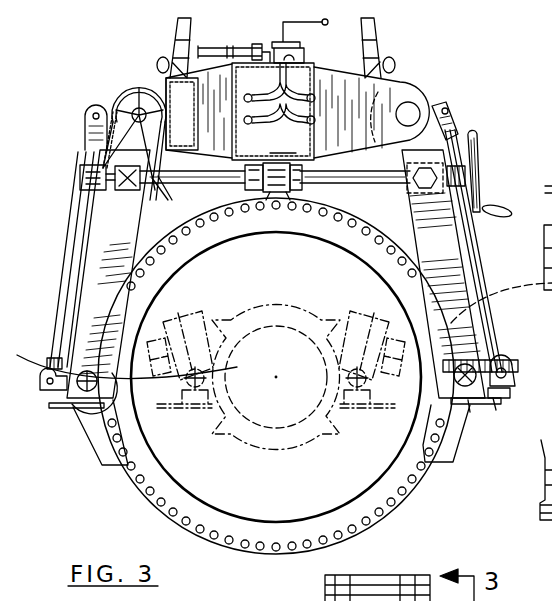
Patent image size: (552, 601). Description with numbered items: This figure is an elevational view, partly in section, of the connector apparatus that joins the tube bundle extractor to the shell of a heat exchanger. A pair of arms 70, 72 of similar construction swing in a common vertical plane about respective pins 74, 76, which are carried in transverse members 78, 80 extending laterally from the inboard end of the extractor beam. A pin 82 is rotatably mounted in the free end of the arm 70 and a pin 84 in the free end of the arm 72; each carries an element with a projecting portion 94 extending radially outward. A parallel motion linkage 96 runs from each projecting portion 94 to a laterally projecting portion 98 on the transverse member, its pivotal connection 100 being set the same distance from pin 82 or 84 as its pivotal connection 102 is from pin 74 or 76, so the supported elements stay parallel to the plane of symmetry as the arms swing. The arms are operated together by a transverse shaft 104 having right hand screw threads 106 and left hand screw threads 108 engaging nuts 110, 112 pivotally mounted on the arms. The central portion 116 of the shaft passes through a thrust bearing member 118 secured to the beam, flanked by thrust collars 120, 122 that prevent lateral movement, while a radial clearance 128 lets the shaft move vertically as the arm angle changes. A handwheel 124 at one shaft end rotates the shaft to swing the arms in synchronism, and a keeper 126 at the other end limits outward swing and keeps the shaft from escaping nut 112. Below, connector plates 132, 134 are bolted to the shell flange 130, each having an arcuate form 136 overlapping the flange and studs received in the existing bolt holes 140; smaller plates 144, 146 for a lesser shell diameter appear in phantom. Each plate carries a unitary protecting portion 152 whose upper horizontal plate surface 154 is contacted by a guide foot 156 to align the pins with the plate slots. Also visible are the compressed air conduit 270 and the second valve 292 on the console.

The arm 70 is at (443, 249).
The arm 72 is at (108, 307).
The pin 74 is at (409, 106).
The pin 76 is at (137, 113).
The transverse member 78 is at (337, 75).
The transverse member 80 is at (193, 106).
The pin 82 is at (476, 382).
The pin 84 is at (80, 398).
The projecting portion 94 is at (56, 410).
The parallel motion linkage 96 is at (66, 262).
The laterally projecting portion 98 is at (110, 107).
The pivotal connection 100 is at (50, 406).
The pivotal connection 102 is at (91, 111).
The transverse shaft 104 is at (318, 182).
The right hand screw threads 106 is at (405, 186).
The left hand screw threads 108 is at (160, 182).
The nut 110 is at (467, 132).
The nut 112 is at (128, 190).
The central portion 116 is at (271, 195).
The thrust bearing member 118 is at (264, 195).
The thrust collar 120 is at (300, 160).
The thrust collar 122 is at (256, 158).
The handwheel 124 is at (478, 196).
The keeper 126 is at (78, 175).
The radial clearance 128 is at (283, 195).
The shell flange 130 is at (223, 540).
The connector plate 132 is at (446, 463).
The connector plate 134 is at (97, 457).
The arcuate form 136 is at (433, 431).
The bolt holes 140 is at (147, 495).
The connector plate 144 is at (326, 436).
The connector plate 146 is at (208, 436).
The unitary protecting portion 152 is at (495, 402).
The upper horizontal plate surface 154 is at (511, 398).
The guide foot 156 is at (468, 402).
The conduit 270 is at (226, 46).
The second valve 292 is at (281, 32).